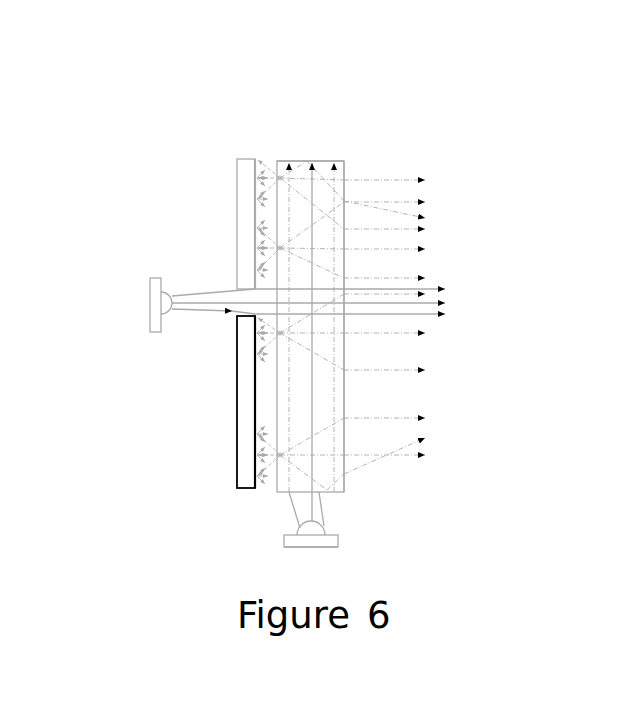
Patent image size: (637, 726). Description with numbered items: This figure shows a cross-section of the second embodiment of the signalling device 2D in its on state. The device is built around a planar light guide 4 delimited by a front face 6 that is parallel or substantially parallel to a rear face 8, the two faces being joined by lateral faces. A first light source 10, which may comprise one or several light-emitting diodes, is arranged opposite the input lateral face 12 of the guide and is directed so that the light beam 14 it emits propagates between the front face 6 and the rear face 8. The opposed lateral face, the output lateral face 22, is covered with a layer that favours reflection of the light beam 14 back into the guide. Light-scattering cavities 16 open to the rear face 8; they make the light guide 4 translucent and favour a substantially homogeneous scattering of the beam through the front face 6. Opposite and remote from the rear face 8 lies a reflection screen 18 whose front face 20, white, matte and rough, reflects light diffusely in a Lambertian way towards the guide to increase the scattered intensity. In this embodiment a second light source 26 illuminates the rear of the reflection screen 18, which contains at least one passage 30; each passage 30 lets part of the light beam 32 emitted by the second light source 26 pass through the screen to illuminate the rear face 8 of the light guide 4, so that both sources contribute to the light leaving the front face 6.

The signalling device 2D is at (305, 118).
The light guide 4 is at (344, 161).
The output lateral face 22 is at (315, 161).
The cavities 16 is at (344, 262).
The front face 6 is at (344, 193).
The reflection screen 18 is at (242, 201).
The passage 30 is at (237, 315).
The front face of the reflection screen 20 is at (252, 253).
The rear face 8 is at (260, 165).
The second light source 26 is at (150, 302).
The light beam 32 is at (205, 310).
The light beam 14 is at (330, 517).
The input lateral face 12 is at (328, 512).
The first light source 10 is at (277, 525).